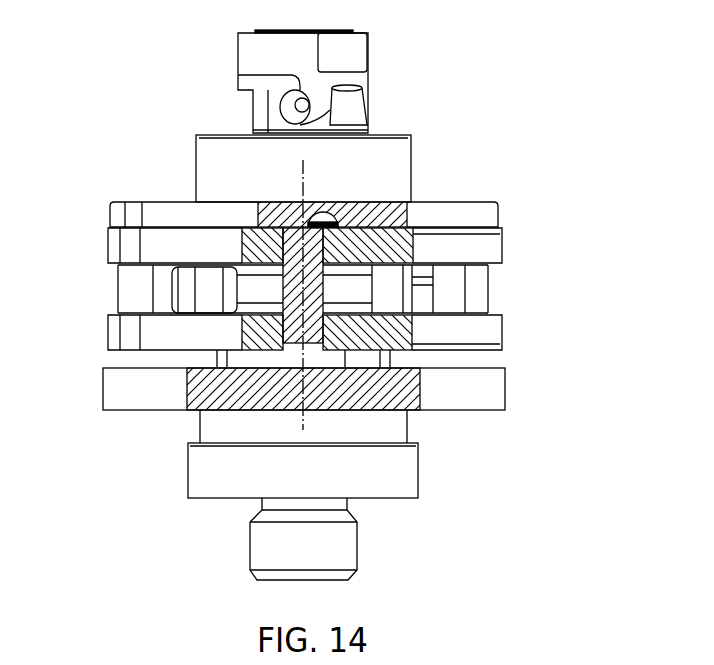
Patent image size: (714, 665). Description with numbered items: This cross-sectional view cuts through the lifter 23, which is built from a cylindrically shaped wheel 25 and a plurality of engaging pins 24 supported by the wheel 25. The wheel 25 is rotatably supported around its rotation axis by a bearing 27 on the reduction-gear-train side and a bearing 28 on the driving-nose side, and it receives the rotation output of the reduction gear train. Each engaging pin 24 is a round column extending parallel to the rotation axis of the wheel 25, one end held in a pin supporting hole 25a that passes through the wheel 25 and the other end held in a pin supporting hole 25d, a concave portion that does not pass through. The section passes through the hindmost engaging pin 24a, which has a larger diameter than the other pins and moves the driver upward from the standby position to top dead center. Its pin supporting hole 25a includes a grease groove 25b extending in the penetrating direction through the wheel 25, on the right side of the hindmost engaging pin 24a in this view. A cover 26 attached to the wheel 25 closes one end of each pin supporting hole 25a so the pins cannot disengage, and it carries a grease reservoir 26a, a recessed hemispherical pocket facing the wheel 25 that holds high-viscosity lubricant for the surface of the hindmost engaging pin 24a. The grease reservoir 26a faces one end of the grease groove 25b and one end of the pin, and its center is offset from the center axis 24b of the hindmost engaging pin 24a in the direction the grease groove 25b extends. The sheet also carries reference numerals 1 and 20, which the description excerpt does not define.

The rotating device 1 is at (545, 42).
The rotation unit 20 is at (536, 98).
The lifter 23 is at (518, 162).
The engaging pins 24 is at (452, 300).
The hindmost engaging pin 24a is at (228, 297).
The center axis 24b is at (303, 398).
The wheel 25 is at (400, 246).
The pin supporting hole 25a is at (300, 235).
The grease groove 25b is at (435, 285).
The pin supporting hole 25d is at (295, 338).
The cover 26 is at (385, 215).
The grease reservoir 26a is at (328, 210).
The bearing 27 is at (400, 472).
The bearing 28 is at (220, 157).